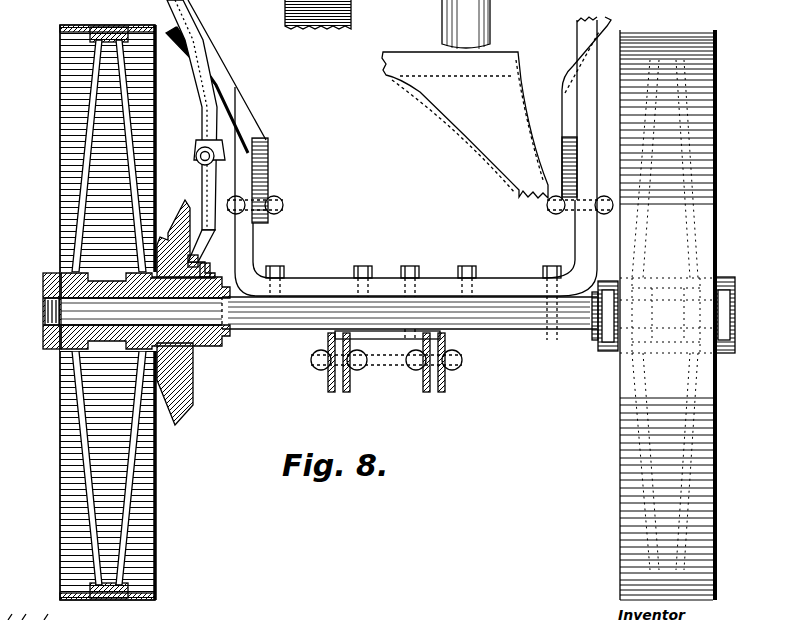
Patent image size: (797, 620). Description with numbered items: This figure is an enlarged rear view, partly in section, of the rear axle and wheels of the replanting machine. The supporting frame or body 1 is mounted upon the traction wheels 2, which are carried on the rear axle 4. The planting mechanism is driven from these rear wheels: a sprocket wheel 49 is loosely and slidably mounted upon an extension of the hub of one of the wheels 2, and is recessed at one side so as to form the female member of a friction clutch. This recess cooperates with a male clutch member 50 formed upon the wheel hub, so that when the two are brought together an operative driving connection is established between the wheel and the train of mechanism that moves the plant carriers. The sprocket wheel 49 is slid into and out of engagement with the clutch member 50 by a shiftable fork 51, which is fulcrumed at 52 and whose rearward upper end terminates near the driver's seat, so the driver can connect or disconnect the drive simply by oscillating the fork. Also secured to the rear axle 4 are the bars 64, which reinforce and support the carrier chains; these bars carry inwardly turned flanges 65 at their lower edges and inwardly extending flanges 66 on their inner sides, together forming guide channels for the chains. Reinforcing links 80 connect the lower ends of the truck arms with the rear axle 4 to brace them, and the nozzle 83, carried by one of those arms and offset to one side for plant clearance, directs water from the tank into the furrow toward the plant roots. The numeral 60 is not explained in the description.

The supporting frame or body 1 is at (238, 163).
The traction wheels 2 is at (70, 170).
The rear axle 4 is at (493, 310).
The sprocket wheel 49 is at (185, 202).
The male clutch member 50 is at (165, 234).
The shiftable fork 51 is at (206, 120).
The fulcrum 52 is at (197, 150).
The bar 60 is at (109, 6).
The bars 64 is at (420, 378).
The inwardly turned flanges 65 is at (286, 14).
The inwardly extending flanges 66 is at (572, 0).
The reinforcing links 80 is at (328, 376).
The nozzle 83 is at (493, 115).